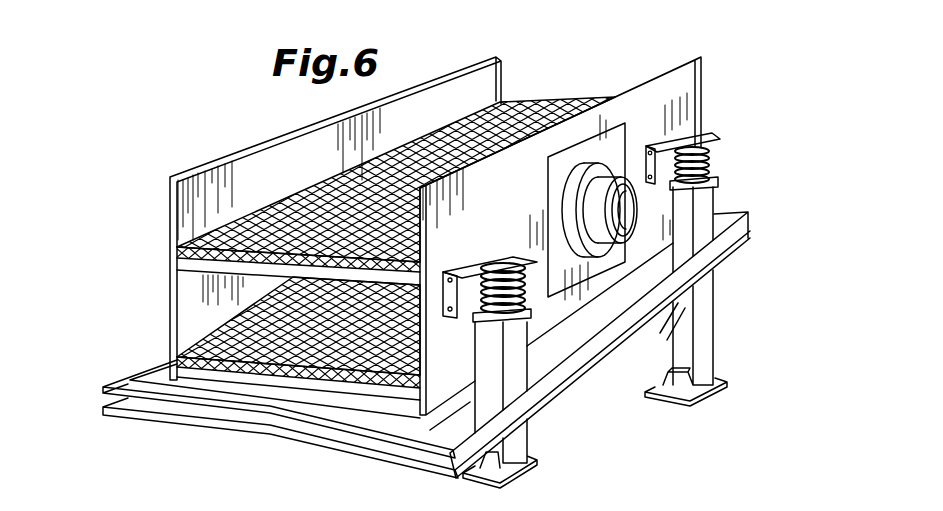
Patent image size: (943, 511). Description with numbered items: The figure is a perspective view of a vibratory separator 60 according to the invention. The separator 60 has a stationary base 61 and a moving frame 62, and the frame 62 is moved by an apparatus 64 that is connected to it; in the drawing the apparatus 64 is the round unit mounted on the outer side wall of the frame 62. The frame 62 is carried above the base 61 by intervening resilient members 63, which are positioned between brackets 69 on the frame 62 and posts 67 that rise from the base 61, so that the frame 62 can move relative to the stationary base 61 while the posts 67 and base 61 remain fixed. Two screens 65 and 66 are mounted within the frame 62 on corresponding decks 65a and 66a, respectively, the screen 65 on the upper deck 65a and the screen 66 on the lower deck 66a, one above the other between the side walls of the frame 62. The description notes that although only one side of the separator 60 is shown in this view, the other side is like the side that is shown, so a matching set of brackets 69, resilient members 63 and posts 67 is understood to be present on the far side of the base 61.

The vibratory separator 60 is at (148, 253).
The stationary base 61 is at (590, 355).
The moving frame 62 is at (187, 320).
The resilient members 63 is at (483, 312).
The apparatus 64 is at (620, 223).
The screen 65 is at (299, 220).
The deck 65a is at (240, 263).
The screen 66 is at (247, 347).
The deck 66a is at (267, 382).
The posts 67 is at (517, 447).
The brackets 69 is at (692, 135).